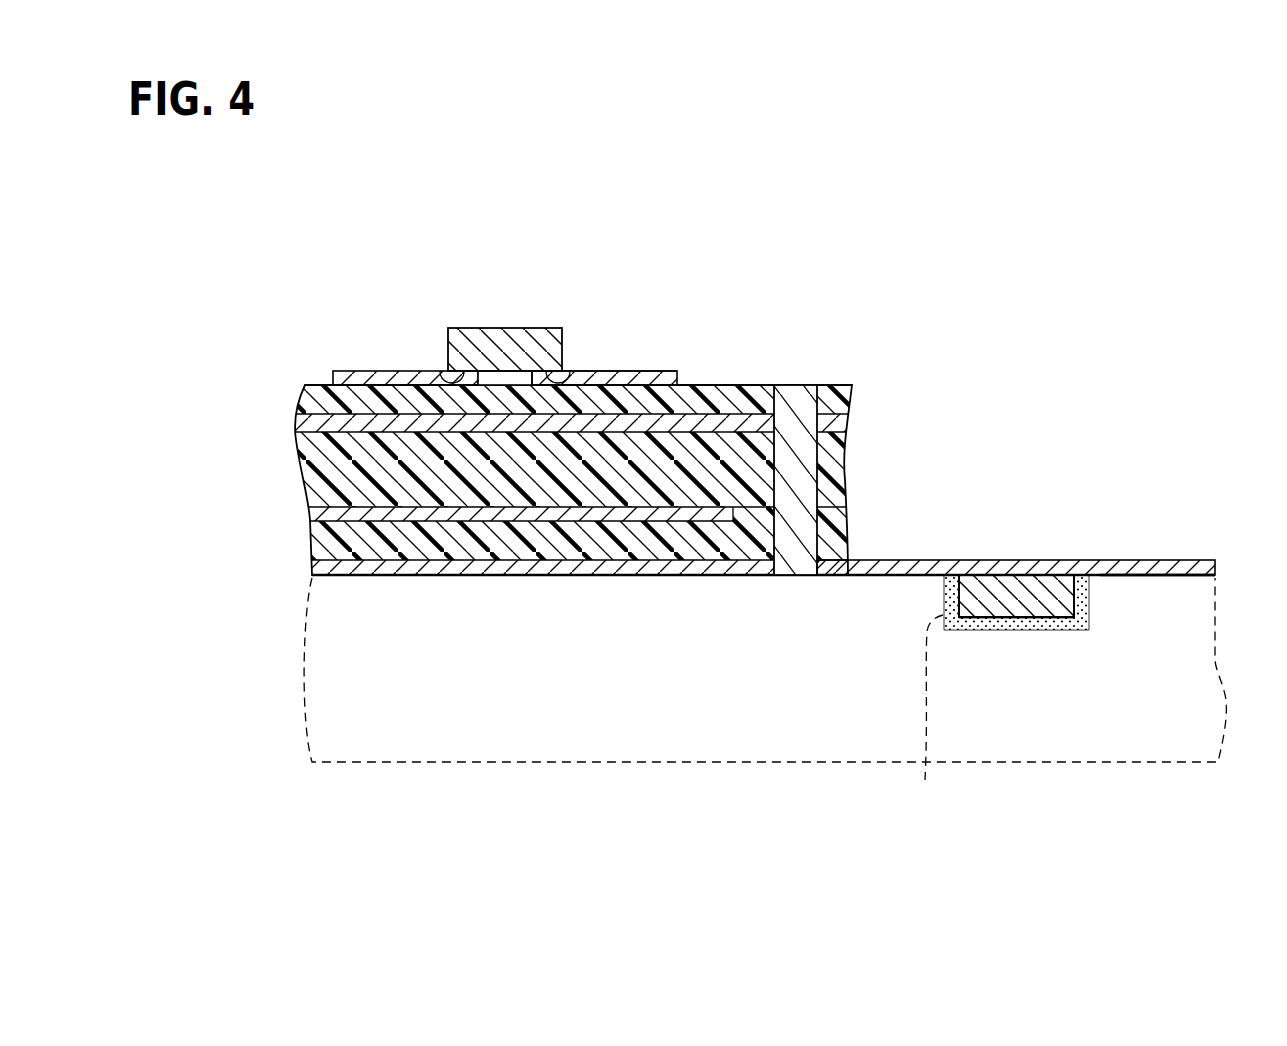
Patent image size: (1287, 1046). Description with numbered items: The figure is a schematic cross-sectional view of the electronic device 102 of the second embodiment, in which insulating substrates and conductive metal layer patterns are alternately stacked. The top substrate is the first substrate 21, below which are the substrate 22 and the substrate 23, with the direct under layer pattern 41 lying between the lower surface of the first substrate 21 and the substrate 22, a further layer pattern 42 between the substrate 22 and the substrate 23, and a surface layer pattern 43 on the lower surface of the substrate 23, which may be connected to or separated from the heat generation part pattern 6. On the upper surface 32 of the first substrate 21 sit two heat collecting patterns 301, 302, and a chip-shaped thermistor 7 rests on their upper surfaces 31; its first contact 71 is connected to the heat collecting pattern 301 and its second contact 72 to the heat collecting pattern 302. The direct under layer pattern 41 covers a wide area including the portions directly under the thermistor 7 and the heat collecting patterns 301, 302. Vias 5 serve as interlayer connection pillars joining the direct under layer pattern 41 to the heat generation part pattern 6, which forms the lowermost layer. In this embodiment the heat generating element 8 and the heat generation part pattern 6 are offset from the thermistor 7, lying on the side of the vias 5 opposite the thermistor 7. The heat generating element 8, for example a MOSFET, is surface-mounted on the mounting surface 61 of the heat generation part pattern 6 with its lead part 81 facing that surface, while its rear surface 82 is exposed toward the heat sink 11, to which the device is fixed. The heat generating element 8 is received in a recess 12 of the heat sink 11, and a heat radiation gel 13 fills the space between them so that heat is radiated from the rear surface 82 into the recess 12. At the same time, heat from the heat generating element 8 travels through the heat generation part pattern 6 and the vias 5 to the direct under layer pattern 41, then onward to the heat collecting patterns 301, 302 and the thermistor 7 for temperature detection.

The electronic device 102 is at (872, 272).
The thermistor 7 is at (490, 335).
The first contact 71 is at (440, 378).
The second contact 72 is at (580, 378).
The heat collecting pattern 301 is at (368, 378).
The heat collecting pattern 302 is at (610, 377).
The upper surfaces of the heat collecting patterns 31 is at (656, 371).
The upper surface (first surface) of the first substrate 32 is at (656, 395).
The first substrate 21 is at (305, 406).
The direct under layer pattern 41 is at (297, 422).
The substrate 22 is at (322, 469).
The layer pattern 42 is at (314, 516).
The substrate 23 is at (332, 543).
The surface layer pattern 43 is at (327, 567).
The vias 5 is at (843, 486).
The heat generation part pattern 6 is at (1212, 568).
The mounting surface 61 is at (1153, 578).
The heat generating element 8 is at (1058, 600).
The lead part 81 is at (1037, 573).
The rear surface 82 is at (1023, 617).
The heat radiation gel 13 is at (1053, 628).
The recess 12 is at (924, 713).
The heat sink 11 is at (1175, 722).